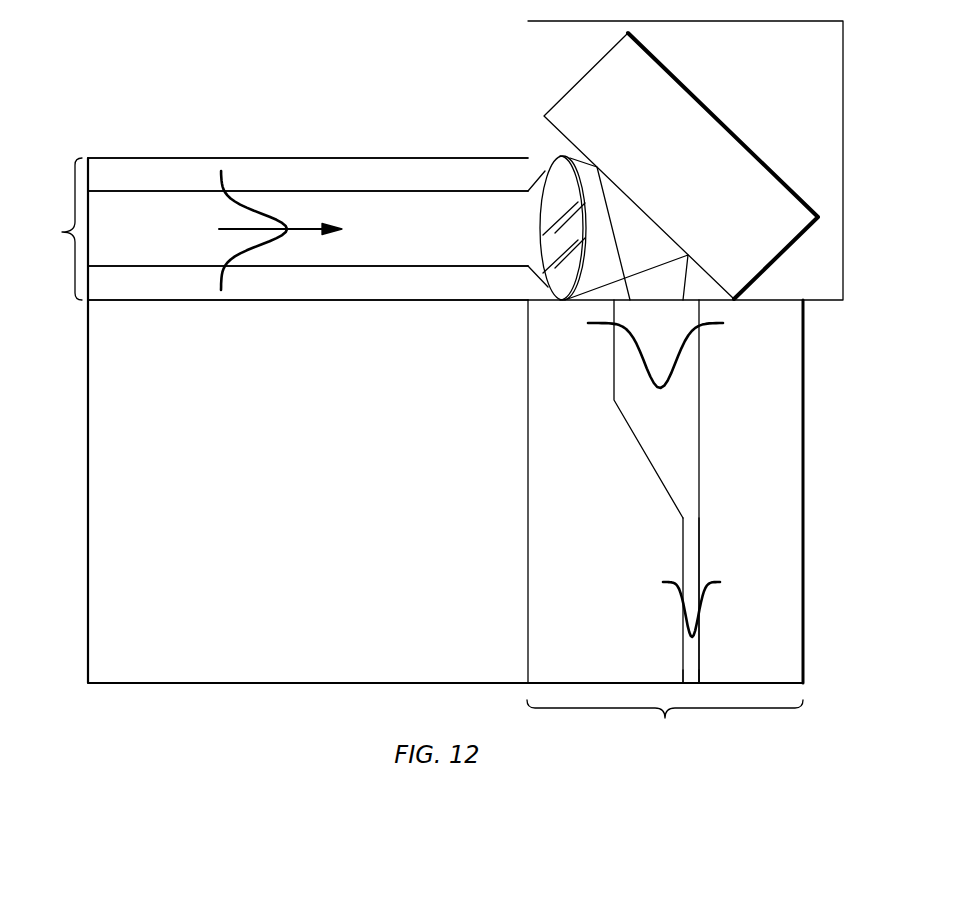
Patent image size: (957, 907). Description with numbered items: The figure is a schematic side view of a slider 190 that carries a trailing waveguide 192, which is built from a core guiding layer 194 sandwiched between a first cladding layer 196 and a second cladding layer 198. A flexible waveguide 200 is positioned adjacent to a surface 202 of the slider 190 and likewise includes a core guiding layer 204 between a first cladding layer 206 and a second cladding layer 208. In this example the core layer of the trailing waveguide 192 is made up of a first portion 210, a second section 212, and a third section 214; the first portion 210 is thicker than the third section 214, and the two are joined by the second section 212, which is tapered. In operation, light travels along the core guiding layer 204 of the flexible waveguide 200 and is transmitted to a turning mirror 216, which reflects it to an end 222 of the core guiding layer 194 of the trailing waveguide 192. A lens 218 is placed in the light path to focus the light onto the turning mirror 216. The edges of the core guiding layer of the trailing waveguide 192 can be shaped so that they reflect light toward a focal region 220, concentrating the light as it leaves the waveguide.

The slider 190 is at (106, 697).
The trailing waveguide 192 is at (665, 725).
The core guiding layer 194 is at (697, 655).
The first cladding layer 196 is at (792, 670).
The second cladding layer 198 is at (548, 620).
The flexible waveguide 200 is at (270, 229).
The surface 202 is at (137, 302).
The core guiding layer 204 is at (177, 217).
The first cladding layer 206 is at (113, 170).
The second cladding layer 208 is at (185, 290).
The first portion 210 is at (665, 338).
The second section 212 is at (677, 422).
The third section 214 is at (692, 555).
The turning mirror 216 is at (737, 162).
The lens 218 is at (560, 210).
The focal region 220 is at (690, 684).
The end 222 is at (650, 302).